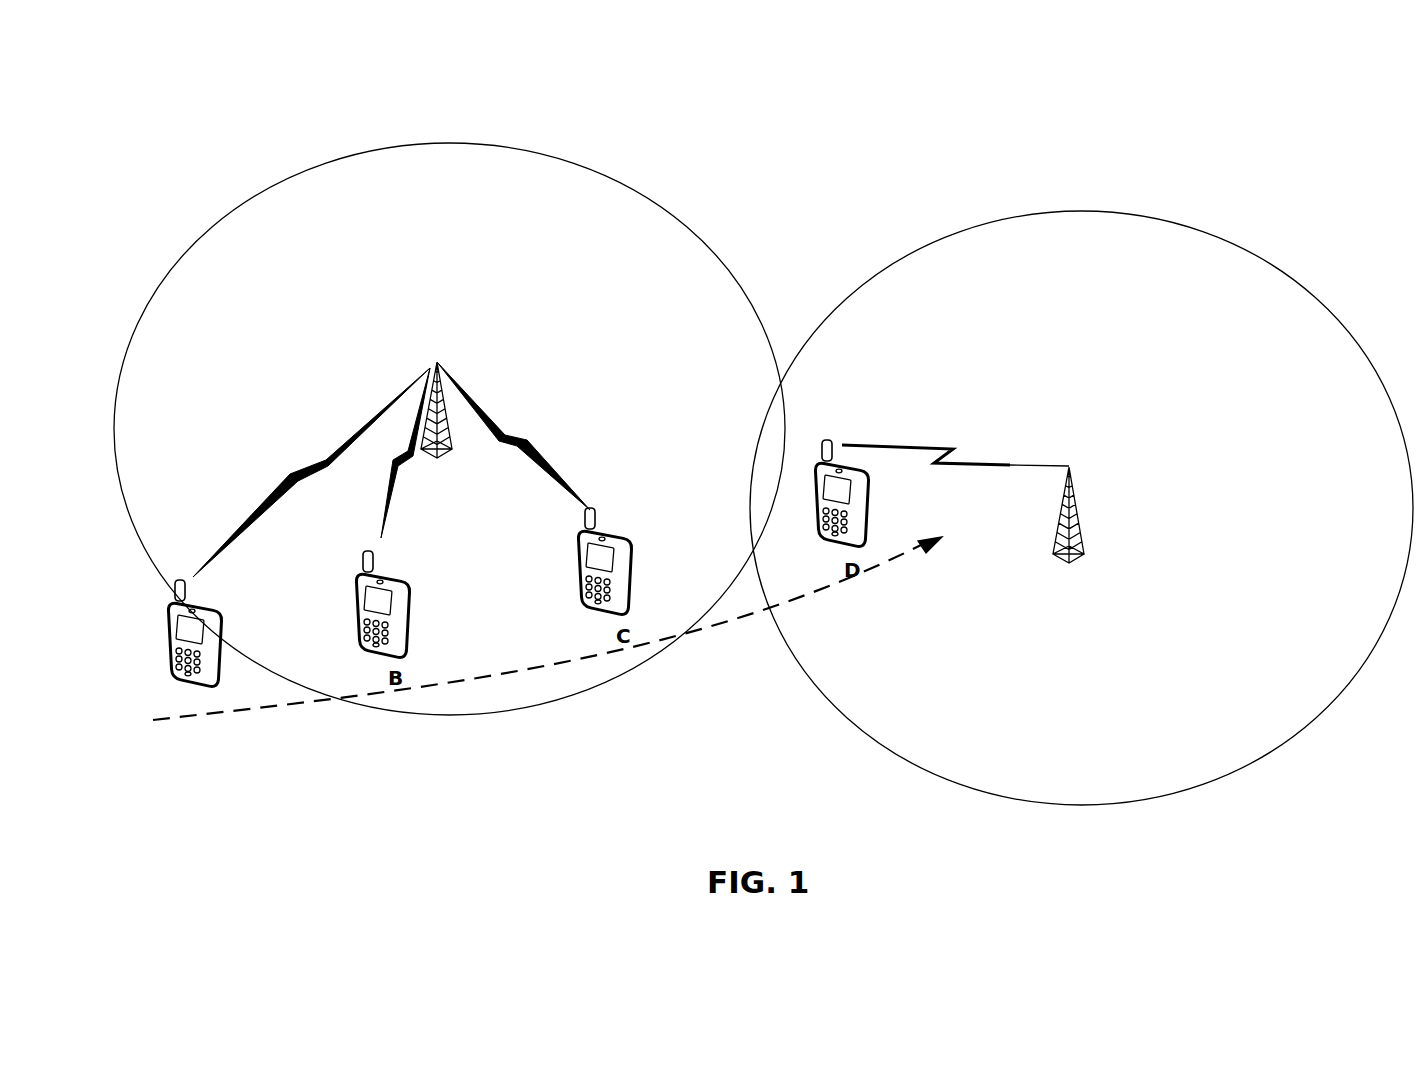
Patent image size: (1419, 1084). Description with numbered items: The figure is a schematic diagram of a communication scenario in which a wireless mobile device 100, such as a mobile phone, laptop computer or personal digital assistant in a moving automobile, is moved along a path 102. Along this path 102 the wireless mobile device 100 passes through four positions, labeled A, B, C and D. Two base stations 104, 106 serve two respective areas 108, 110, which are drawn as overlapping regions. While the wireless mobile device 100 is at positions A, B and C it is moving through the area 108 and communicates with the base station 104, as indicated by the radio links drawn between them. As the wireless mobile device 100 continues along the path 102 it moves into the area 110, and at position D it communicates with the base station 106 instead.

The wireless mobile device 100 is at (168, 657).
The path 102 is at (815, 598).
The base station 104 is at (440, 360).
The base station 106 is at (1070, 466).
The area 108 is at (677, 217).
The area 110 is at (1237, 242).